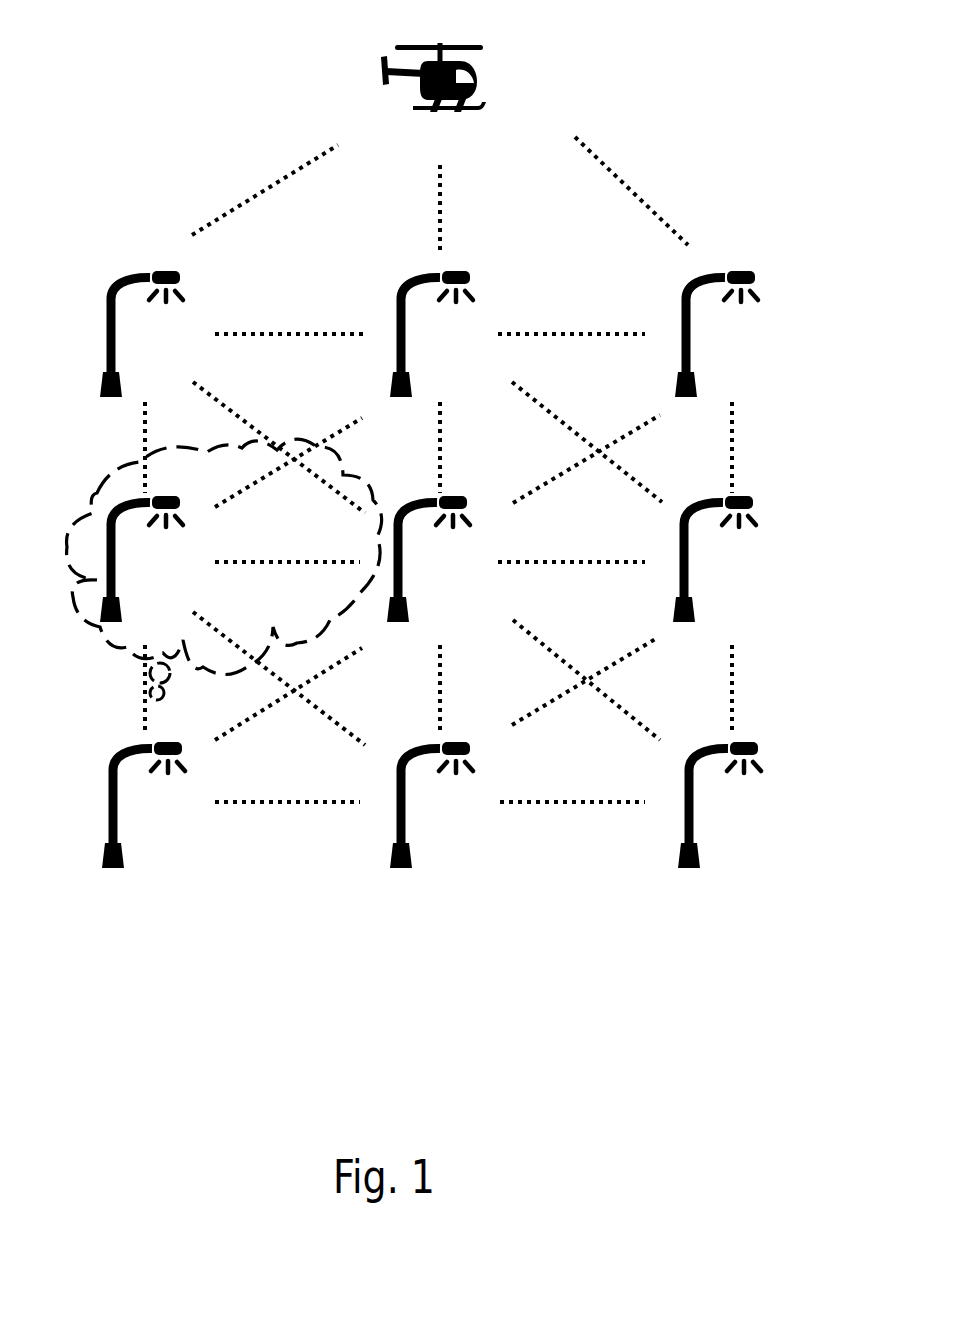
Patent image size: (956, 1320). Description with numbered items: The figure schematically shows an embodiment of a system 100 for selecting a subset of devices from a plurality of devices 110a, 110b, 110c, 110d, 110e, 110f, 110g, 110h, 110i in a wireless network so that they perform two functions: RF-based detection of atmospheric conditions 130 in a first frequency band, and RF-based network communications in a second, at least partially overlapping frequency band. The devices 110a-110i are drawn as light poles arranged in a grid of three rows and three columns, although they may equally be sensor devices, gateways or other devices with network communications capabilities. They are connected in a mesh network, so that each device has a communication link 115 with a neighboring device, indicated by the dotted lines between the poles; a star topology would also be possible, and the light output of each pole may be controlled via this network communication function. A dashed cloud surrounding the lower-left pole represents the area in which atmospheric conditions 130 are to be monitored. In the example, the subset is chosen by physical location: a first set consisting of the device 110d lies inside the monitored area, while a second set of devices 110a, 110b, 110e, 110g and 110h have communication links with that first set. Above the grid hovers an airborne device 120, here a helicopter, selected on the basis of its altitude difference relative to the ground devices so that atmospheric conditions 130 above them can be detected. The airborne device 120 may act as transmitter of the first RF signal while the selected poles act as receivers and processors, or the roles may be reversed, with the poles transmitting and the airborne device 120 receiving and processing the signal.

The system 100 is at (419, 1048).
The device 110a is at (129, 262).
The device 110b is at (460, 262).
The device 110c is at (735, 262).
The device 110d is at (155, 492).
The device 110e is at (463, 492).
The device 110f is at (735, 492).
The device 110g is at (152, 828).
The device 110h is at (432, 828).
The device 110i is at (713, 828).
The communication link 115 is at (633, 182).
The airborne device 120 is at (495, 80).
The atmospheric conditions 130 is at (290, 448).